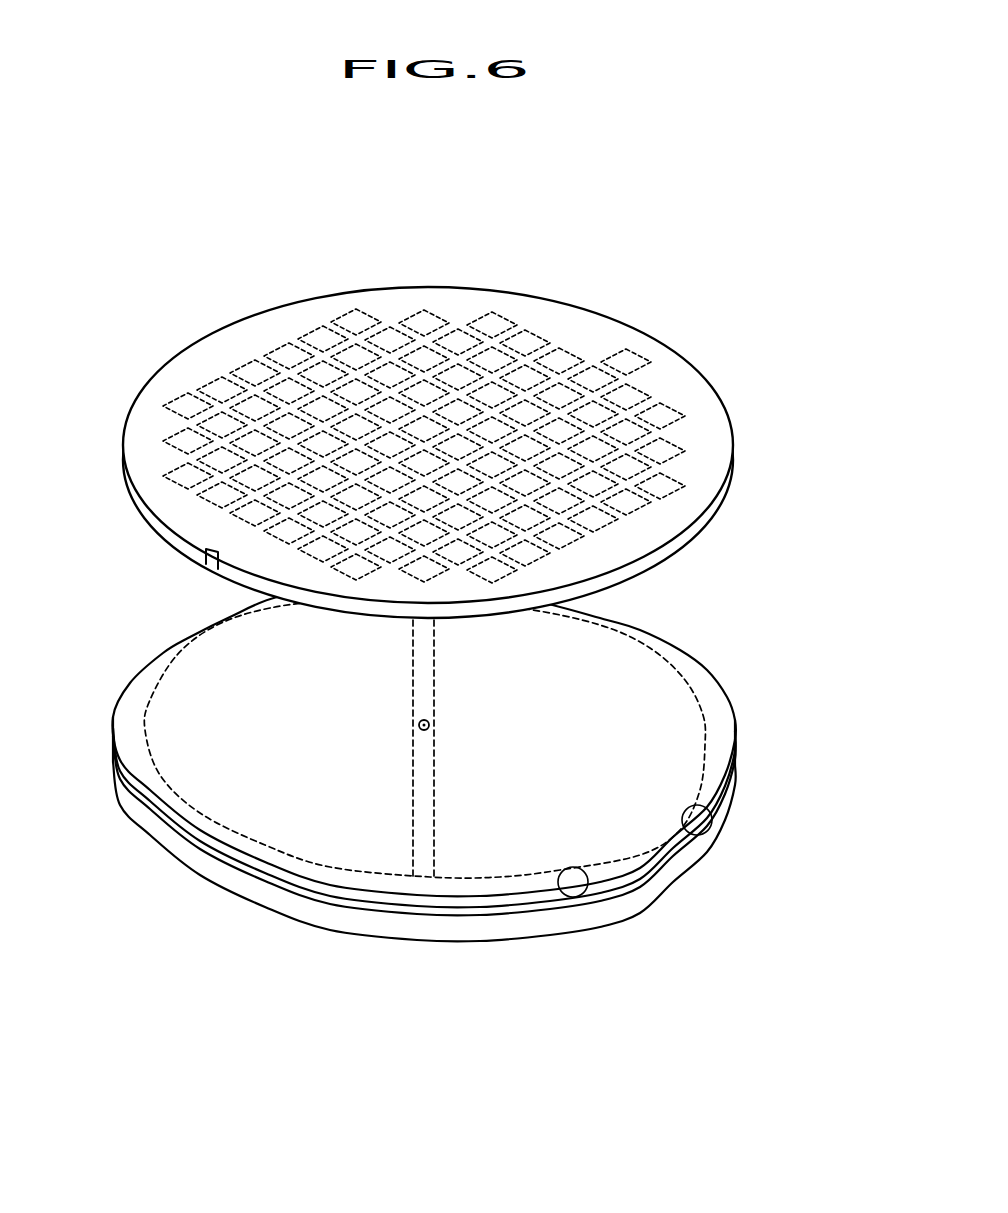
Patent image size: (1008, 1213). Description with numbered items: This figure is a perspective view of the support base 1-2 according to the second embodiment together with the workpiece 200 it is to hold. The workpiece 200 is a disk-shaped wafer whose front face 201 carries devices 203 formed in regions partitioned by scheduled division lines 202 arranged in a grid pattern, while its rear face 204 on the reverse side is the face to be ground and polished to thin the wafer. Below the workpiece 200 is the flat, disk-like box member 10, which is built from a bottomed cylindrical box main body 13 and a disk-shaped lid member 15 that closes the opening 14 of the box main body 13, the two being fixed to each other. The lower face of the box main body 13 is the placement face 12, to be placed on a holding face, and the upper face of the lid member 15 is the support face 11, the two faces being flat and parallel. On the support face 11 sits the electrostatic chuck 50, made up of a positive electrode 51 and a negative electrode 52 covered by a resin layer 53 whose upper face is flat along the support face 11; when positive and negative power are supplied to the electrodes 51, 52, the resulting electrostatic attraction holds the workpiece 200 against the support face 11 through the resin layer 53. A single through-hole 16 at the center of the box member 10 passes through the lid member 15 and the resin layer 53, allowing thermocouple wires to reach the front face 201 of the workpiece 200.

The support base 1-2 is at (459, 812).
The box member 10 is at (487, 881).
The support face 11 is at (727, 810).
The placement face 12 is at (675, 882).
The box main body 13 is at (366, 947).
The opening 14 is at (595, 897).
The lid member 15 is at (291, 912).
The through-hole 16 is at (428, 729).
The electrostatic chuck 50 is at (452, 812).
The positive electrode 51 is at (193, 651).
The negative electrode 52 is at (680, 671).
The resin layer 53 is at (133, 740).
The workpiece 200 is at (501, 420).
The front face 201 is at (637, 578).
The scheduled division lines 202 is at (521, 402).
The devices 203 is at (550, 350).
The rear face 204 is at (698, 480).